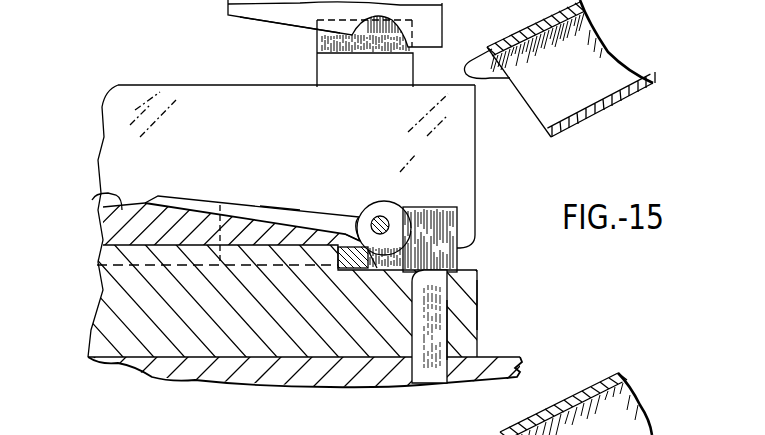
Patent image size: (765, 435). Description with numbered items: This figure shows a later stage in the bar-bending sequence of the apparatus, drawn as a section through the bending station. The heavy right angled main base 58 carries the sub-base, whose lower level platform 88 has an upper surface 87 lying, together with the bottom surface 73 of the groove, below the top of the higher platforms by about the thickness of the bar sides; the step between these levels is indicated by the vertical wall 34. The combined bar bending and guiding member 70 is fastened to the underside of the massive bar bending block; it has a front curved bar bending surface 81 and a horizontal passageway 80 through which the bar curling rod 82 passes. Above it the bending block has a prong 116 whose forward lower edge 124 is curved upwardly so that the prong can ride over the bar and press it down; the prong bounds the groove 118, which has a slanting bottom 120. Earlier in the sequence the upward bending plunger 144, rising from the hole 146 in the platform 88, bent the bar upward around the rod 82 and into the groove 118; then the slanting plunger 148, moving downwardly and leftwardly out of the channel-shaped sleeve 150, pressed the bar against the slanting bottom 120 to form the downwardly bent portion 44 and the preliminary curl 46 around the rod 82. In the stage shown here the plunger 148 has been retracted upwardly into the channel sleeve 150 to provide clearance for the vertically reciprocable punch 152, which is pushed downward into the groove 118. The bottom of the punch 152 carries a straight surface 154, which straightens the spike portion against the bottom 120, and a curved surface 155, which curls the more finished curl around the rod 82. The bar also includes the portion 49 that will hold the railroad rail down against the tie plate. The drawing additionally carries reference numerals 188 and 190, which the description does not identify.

The vertical wall 34 is at (337, 253).
The downwardly bent portion 44 is at (197, 208).
The preliminary curl 46 is at (390, 202).
The rail holding portion 49 is at (353, 265).
The main base 58 is at (237, 372).
The combined bar bending and guiding member 70 is at (282, 186).
The bottom surface of the groove 73 is at (250, 270).
The horizontal passageway 80 is at (365, 212).
The front curved bar bending surface 81 is at (430, 230).
The bar curling rod 82 is at (378, 215).
The upper surface of lower level platform 87 is at (460, 268).
The lower level platform 88 is at (477, 293).
The prong 116 is at (475, 176).
The groove 118 is at (122, 148).
The slanting bottom 120 is at (108, 207).
The forward lower edge of prong 124 is at (457, 248).
The upward bending plunger 144 is at (430, 308).
The hole 146 is at (447, 338).
The slanting plunger 148 is at (505, 60).
The channel-shaped sleeve 150 is at (598, 118).
The punch 152 is at (247, 10).
The straight surface 154 is at (296, 28).
The curved surface 155 is at (392, 18).
The dome projection 188 is at (318, 40).
The block side wall 190 is at (320, 72).